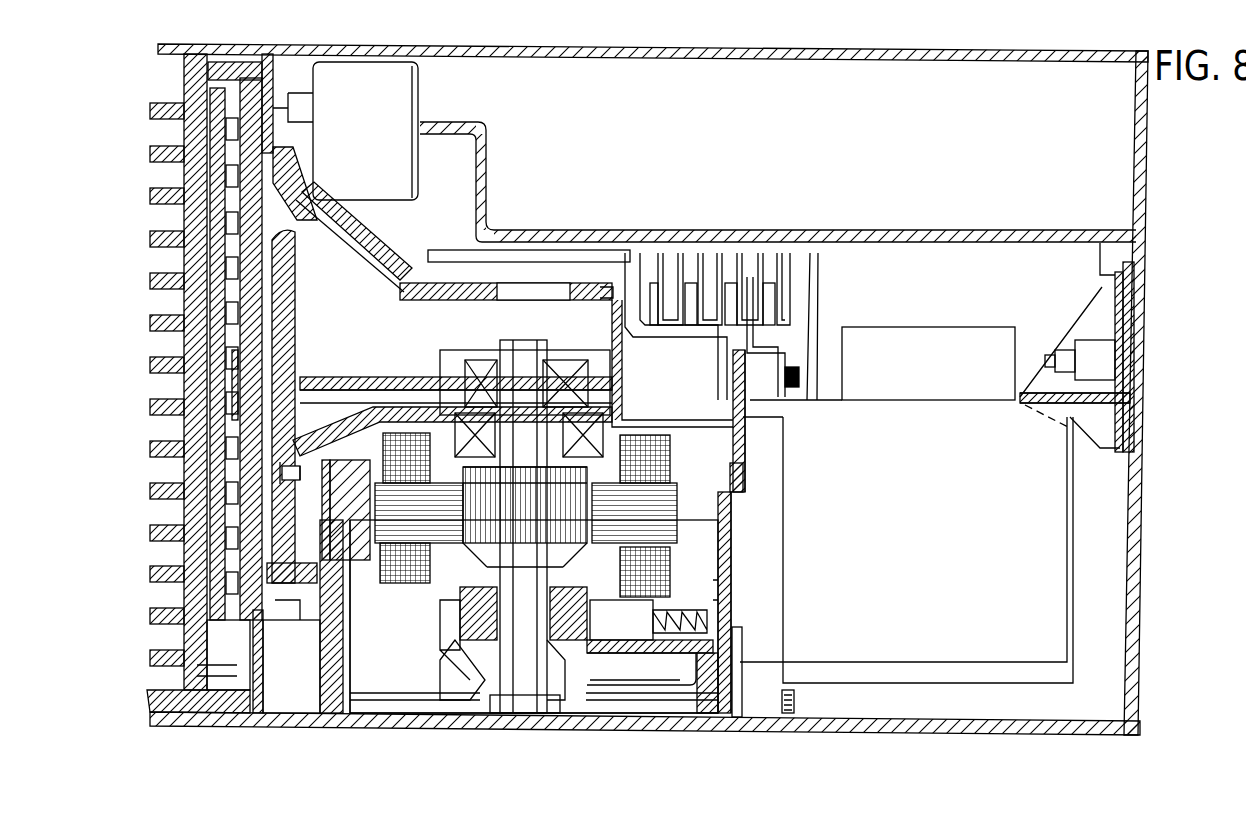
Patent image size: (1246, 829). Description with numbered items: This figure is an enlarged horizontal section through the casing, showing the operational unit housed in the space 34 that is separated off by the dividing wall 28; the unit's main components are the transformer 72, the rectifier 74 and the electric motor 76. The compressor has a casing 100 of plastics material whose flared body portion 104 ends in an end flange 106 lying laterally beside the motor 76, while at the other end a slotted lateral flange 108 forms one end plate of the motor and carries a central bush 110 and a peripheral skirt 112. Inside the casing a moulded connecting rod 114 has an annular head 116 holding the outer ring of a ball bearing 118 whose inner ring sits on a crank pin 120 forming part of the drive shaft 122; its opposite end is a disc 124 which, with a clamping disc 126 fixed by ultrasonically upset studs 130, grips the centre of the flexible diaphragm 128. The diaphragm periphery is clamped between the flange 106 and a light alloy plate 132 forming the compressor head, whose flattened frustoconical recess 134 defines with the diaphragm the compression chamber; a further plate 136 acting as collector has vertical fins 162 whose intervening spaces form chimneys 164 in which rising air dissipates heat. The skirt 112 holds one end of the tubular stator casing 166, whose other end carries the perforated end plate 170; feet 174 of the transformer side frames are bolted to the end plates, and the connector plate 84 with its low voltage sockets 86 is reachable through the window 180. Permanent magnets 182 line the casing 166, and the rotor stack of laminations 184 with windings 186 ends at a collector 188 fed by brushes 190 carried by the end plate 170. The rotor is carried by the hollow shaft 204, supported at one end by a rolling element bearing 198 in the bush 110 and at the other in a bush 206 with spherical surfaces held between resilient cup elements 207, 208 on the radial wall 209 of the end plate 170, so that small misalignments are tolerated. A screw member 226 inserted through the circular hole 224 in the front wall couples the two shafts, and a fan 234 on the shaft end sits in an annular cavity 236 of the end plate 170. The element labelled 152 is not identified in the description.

The dividing wall 28 is at (923, 232).
The space 34 is at (683, 363).
The transformer 72 is at (1138, 598).
The rectifier 74 is at (752, 255).
The electric motor 76 is at (400, 640).
The connector plate 84 is at (1130, 298).
The electrical connector sockets 86 is at (1134, 358).
The casing 100 is at (397, 272).
The flared body portion 104 is at (360, 250).
The end flange 106 is at (300, 158).
The slotted lateral flange 108 is at (370, 405).
The central bush 110 is at (615, 440).
The peripheral skirt 112 is at (745, 474).
The connecting rod 114 is at (375, 368).
The annular head 116 is at (482, 360).
The ball bearing 118 is at (560, 366).
The crank pin 120 is at (522, 365).
The drive shaft 122 is at (585, 384).
The disc 124 is at (290, 292).
The clamping disc 126 is at (258, 264).
The flexible diaphragm 128 is at (262, 223).
The studs 130 is at (296, 462).
The plate 132 is at (246, 72).
The recess 134 is at (260, 370).
The plate 136 is at (228, 72).
The block 152 is at (368, 78).
The fins 162 is at (197, 137).
The vertical chimneys 164 is at (226, 178).
The tubular stator casing 166 is at (735, 540).
The perforated end plate 170 is at (749, 654).
The feet 174 is at (770, 370).
The window 180 is at (1134, 345).
The permanent magnets 182 is at (340, 548).
The stack of laminations 184 is at (487, 548).
The windings 186 is at (715, 592).
The collector 188 is at (587, 618).
The brushes 190 is at (688, 612).
The rolling element bearing 198 is at (462, 402).
The hollow shaft 204 is at (455, 630).
The bush 206 is at (460, 705).
The resilient cup element 207 is at (686, 681).
The resilient cup element 208 is at (580, 682).
The radial wall 209 is at (720, 620).
The circular hole 224 is at (512, 713).
The screw member 226 is at (555, 728).
The fan 234 is at (345, 682).
The annular cavity 236 is at (680, 713).